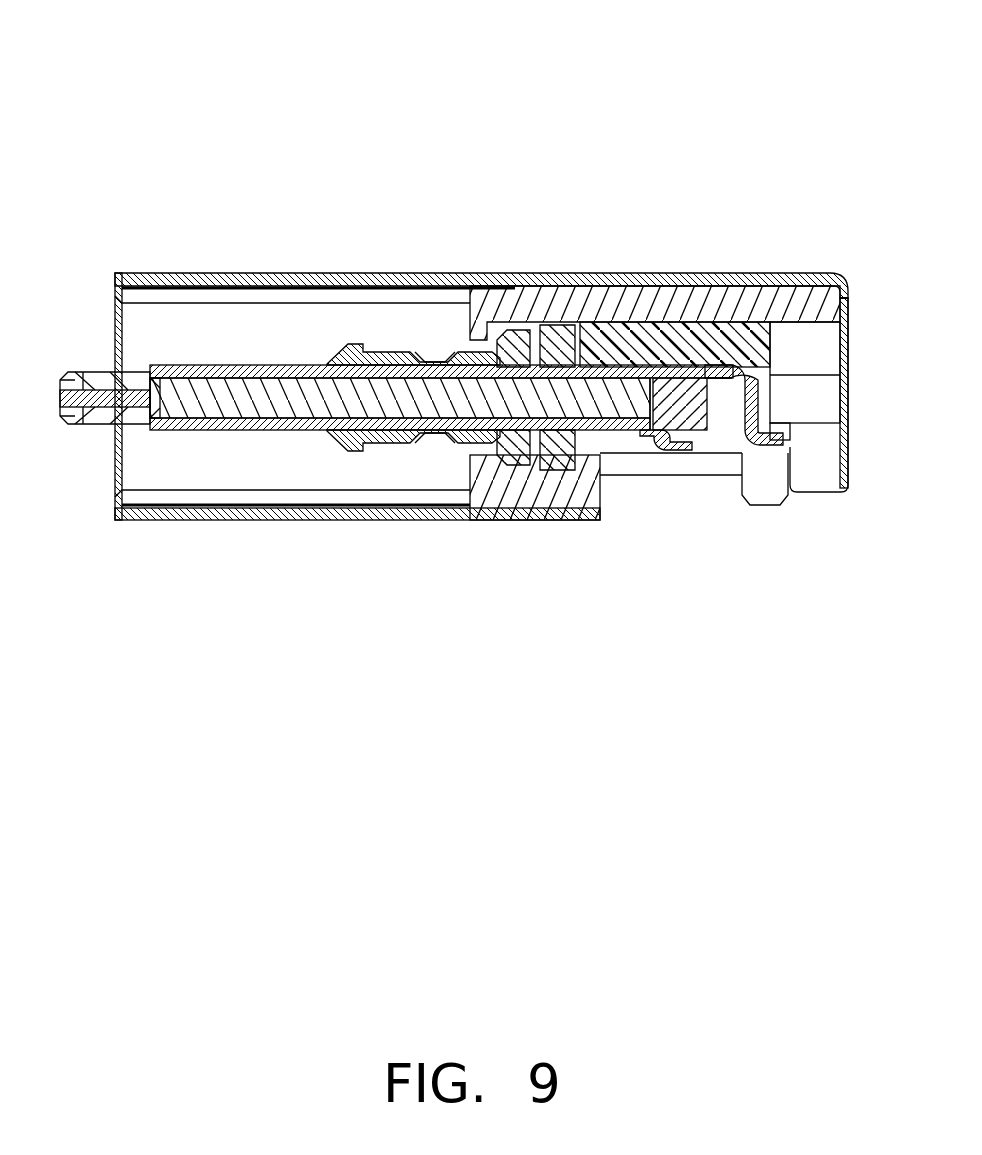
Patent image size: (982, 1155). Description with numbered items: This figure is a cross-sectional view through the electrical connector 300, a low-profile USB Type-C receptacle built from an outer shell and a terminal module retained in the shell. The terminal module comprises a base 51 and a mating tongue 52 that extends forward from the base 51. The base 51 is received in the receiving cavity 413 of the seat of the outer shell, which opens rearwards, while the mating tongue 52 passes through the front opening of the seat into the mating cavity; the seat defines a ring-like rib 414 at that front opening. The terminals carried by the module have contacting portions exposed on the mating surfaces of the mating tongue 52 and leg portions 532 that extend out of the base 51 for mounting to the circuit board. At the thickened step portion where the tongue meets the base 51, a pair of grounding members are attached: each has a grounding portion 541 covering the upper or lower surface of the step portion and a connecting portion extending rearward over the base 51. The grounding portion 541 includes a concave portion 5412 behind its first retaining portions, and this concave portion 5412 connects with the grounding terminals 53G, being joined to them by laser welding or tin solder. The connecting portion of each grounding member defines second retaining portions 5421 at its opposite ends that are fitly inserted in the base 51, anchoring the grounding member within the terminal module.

The electrical connector 300 is at (454, 341).
The mating tongue 52 is at (190, 392).
The grounding terminals 53G is at (255, 370).
The grounding portion 541 is at (392, 348).
The concave portion 5412 is at (437, 352).
The second retaining portions 5421 is at (555, 348).
The base 51 is at (615, 348).
The receiving cavity 413 is at (780, 350).
The ring-like rib 414 is at (480, 465).
The leg portions 532 is at (765, 440).